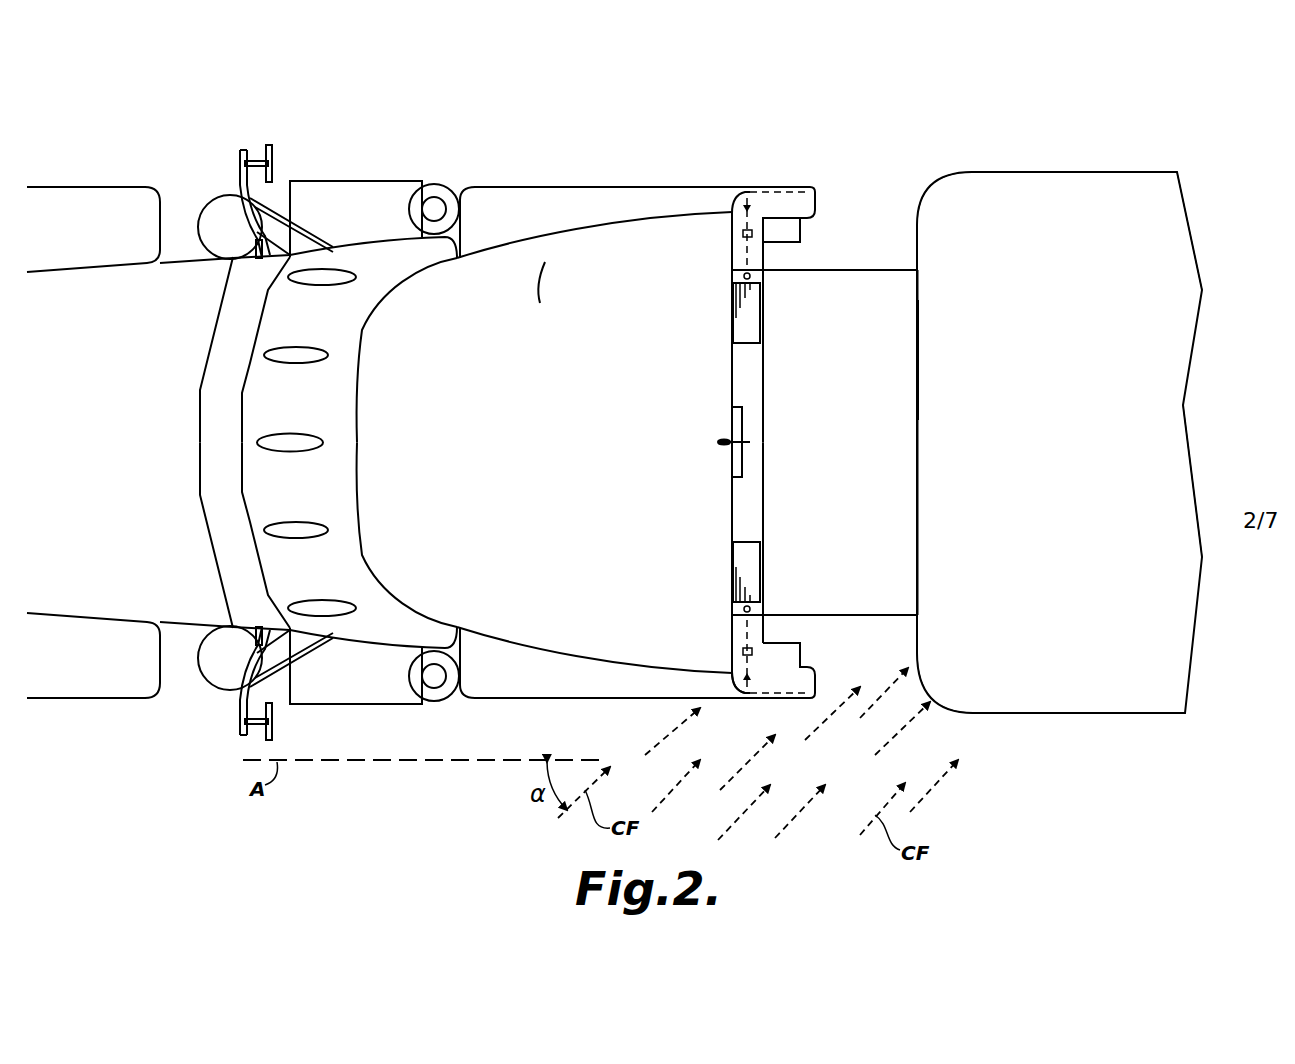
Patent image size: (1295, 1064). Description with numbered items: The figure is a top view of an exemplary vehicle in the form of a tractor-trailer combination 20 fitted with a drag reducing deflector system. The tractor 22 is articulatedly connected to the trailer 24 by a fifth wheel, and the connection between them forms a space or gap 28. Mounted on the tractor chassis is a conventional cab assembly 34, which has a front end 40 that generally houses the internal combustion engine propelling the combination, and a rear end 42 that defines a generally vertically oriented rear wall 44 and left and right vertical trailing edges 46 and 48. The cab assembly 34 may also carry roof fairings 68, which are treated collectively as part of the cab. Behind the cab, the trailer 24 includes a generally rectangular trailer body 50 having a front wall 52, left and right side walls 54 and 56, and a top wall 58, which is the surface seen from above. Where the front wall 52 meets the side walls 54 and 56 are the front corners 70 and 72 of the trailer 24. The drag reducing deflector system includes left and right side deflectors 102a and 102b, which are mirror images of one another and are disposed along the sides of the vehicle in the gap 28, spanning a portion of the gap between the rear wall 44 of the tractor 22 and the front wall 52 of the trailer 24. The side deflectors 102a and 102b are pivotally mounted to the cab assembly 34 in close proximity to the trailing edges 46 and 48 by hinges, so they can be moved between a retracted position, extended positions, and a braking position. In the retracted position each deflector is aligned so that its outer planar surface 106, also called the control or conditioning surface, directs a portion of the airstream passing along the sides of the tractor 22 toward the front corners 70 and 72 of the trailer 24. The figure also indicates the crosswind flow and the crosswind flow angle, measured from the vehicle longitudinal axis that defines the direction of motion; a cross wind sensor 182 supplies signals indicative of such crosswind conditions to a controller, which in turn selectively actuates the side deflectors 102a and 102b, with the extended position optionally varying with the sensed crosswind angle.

The tractor-trailer combination 20 is at (1205, 175).
The tractor 22 is at (513, 178).
The trailer 24 is at (1102, 165).
The gap 28 is at (850, 243).
The cab assembly 34 is at (290, 232).
The front end 40 is at (47, 297).
The rear end 42 is at (675, 187).
The rear wall 44 is at (732, 387).
The left vertical trailing edge 46 is at (745, 697).
The right vertical trailing edge 48 is at (745, 187).
The trailer body 50 is at (1190, 438).
The front wall 52 is at (918, 360).
The left side wall 54 is at (1067, 715).
The right side wall 56 is at (1038, 170).
The top wall 58 is at (1078, 452).
The roof fairings 68 is at (545, 262).
The left front corner 70 is at (940, 703).
The right front corner 72 is at (932, 188).
The left side deflector 102a is at (787, 687).
The right side deflector 102b is at (778, 225).
The outer planar surface 106 is at (767, 692).
The cross wind sensor 182 is at (752, 452).